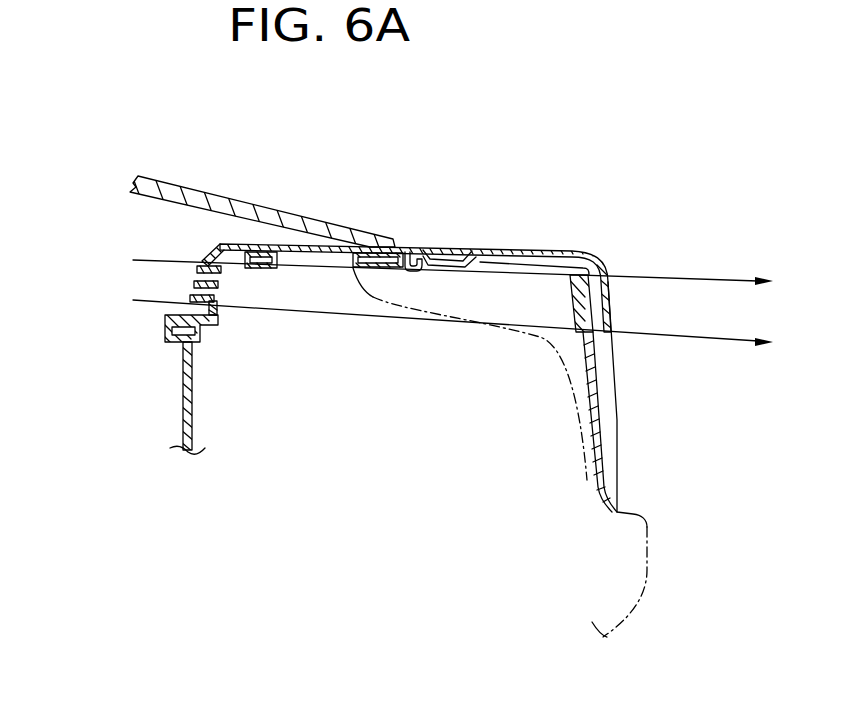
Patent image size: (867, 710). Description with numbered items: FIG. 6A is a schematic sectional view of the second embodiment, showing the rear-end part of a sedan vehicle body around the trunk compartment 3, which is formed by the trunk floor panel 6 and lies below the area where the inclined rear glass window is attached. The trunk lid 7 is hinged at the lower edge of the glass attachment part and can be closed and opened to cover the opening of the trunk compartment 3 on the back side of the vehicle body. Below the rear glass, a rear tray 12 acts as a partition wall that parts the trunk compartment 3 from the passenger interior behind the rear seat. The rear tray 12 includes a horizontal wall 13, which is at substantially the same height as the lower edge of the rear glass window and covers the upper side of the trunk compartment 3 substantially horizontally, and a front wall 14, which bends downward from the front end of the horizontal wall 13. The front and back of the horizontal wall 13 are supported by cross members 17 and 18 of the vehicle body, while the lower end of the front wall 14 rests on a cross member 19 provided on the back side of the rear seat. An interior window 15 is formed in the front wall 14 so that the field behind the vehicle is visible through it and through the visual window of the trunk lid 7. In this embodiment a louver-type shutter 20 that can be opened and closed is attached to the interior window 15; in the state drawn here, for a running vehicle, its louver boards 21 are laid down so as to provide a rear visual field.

The trunk compartment 3 is at (496, 453).
The trunk floor panel 6 is at (192, 396).
The trunk lid 7 is at (560, 239).
The rear tray 12 is at (286, 236).
The horizontal wall 13 is at (312, 248).
The front wall 14 is at (212, 249).
The interior window 15 is at (197, 270).
The cross member 17 is at (261, 253).
The cross member 18 is at (407, 271).
The cross member 19 is at (172, 342).
The louver-type shutter 20 is at (160, 278).
The louver boards 21 is at (222, 270).